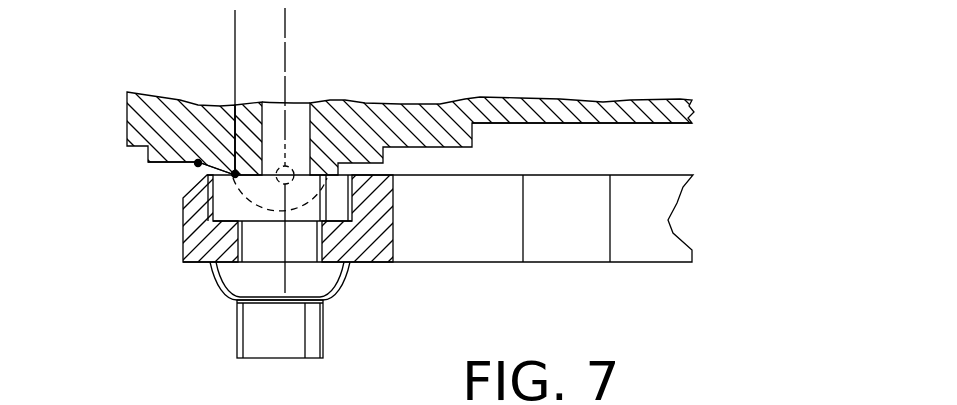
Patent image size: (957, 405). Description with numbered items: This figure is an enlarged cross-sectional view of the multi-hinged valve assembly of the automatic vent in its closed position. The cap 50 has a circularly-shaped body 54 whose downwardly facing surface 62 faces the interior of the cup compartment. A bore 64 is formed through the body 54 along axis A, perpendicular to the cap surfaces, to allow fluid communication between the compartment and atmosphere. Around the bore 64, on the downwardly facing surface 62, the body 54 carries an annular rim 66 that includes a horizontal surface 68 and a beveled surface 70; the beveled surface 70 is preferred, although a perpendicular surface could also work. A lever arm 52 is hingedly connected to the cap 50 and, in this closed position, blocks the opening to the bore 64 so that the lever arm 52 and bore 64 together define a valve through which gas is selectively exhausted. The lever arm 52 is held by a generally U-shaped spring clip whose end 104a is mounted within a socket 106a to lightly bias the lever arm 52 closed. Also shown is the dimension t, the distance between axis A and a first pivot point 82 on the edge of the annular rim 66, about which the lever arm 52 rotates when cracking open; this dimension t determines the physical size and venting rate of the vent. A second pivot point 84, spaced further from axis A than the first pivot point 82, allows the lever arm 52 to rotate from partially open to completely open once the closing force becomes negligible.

The cap 50 is at (483, 98).
The lever arm 52 is at (642, 259).
The body 54 is at (130, 92).
The downwardly facing surface 62 is at (662, 124).
The bore 64 is at (258, 142).
The annular rim 66 is at (184, 238).
The horizontal surface 68 is at (327, 178).
The beveled surface 70 is at (234, 174).
The first pivot point 82 is at (184, 207).
The second pivot point 84 is at (198, 163).
The end of spring clip 104a is at (290, 183).
The socket 106a is at (263, 205).
The axis A is at (287, 87).
The dimension t is at (182, 26).